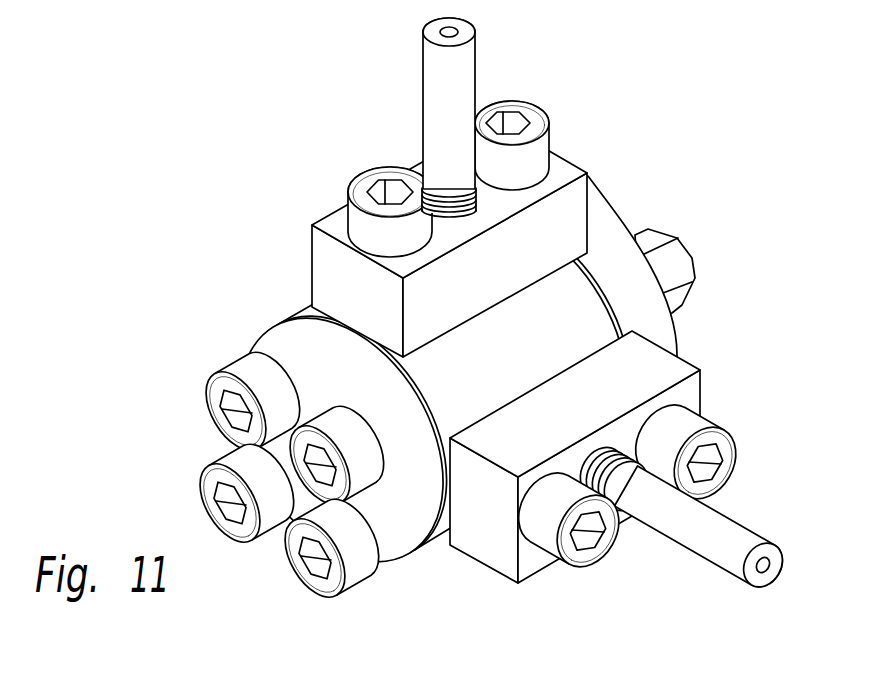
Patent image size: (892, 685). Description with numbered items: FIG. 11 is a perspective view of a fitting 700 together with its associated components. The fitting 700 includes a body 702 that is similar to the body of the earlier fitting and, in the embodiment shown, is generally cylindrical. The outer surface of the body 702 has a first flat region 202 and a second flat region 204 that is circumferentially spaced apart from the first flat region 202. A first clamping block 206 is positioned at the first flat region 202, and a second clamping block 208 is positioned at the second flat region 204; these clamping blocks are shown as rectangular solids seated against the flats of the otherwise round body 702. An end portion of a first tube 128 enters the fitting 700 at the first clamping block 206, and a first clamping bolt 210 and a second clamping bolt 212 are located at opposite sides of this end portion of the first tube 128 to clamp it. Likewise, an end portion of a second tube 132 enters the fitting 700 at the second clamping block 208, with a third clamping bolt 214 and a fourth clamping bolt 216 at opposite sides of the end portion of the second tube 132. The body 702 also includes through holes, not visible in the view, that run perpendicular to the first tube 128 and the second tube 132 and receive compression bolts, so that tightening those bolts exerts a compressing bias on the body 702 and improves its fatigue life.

The first tube 128 is at (470, 62).
The second tube 132 is at (735, 535).
The first flat region 202 is at (380, 339).
The second flat region 204 is at (459, 512).
The first clamping block 206 is at (317, 268).
The second clamping block 208 is at (678, 341).
The first clamping bolt 210 is at (362, 182).
The second clamping bolt 212 is at (540, 122).
The third clamping bolt 214 is at (583, 560).
The fourth clamping bolt 216 is at (725, 462).
The fitting 700 is at (741, 213).
The body 702 is at (587, 302).